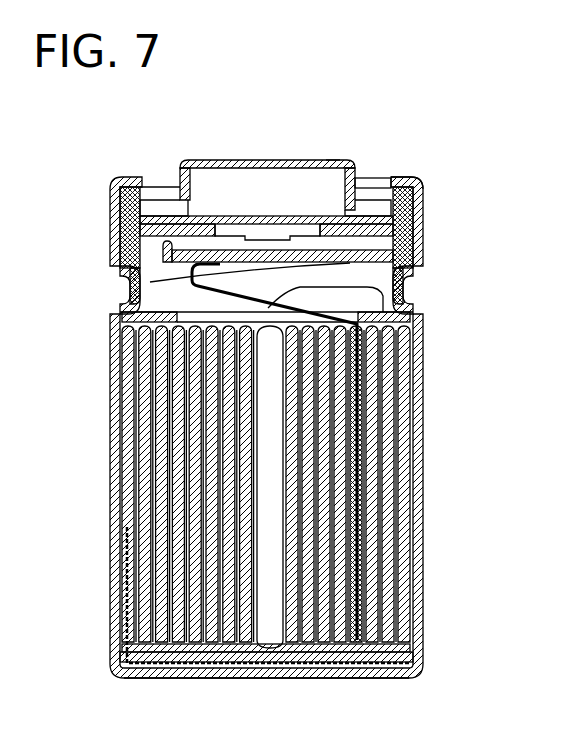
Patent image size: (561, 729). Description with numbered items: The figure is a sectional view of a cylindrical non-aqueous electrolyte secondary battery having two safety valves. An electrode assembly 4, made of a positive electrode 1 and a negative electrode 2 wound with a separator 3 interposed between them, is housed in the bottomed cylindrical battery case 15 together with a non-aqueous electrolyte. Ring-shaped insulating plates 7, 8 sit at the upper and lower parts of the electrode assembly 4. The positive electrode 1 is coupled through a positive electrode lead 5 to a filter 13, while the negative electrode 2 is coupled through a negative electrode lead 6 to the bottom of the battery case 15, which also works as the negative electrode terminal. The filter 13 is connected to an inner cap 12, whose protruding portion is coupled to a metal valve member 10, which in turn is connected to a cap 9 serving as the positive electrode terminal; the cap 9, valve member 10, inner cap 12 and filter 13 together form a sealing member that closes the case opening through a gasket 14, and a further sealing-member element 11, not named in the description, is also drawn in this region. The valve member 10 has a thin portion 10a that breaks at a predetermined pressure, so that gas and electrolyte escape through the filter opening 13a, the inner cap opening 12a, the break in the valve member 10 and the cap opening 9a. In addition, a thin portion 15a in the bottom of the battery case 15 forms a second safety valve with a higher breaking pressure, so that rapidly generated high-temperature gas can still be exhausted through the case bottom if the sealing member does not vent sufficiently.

The positive electrode 1 is at (400, 505).
The negative electrode 2 is at (400, 485).
The separator 3 is at (405, 457).
The electrode assembly 4 is at (301, 489).
The positive electrode lead 5 is at (390, 288).
The negative electrode lead 6 is at (270, 678).
The insulating plate 7 is at (408, 314).
The insulating plate 8 is at (407, 661).
The cap 9 is at (266, 165).
The cap opening 9a is at (330, 153).
The valve member 10 is at (186, 192).
The thin portion 10a is at (338, 213).
The cap plate 11 is at (398, 230).
The inner cap 12 is at (244, 226).
The inner cap opening 12a is at (203, 216).
The filter 13 is at (120, 254).
The filter opening 13a is at (140, 285).
The gasket 14 is at (413, 200).
The battery case 15 is at (116, 432).
The thin portion 15a is at (345, 678).